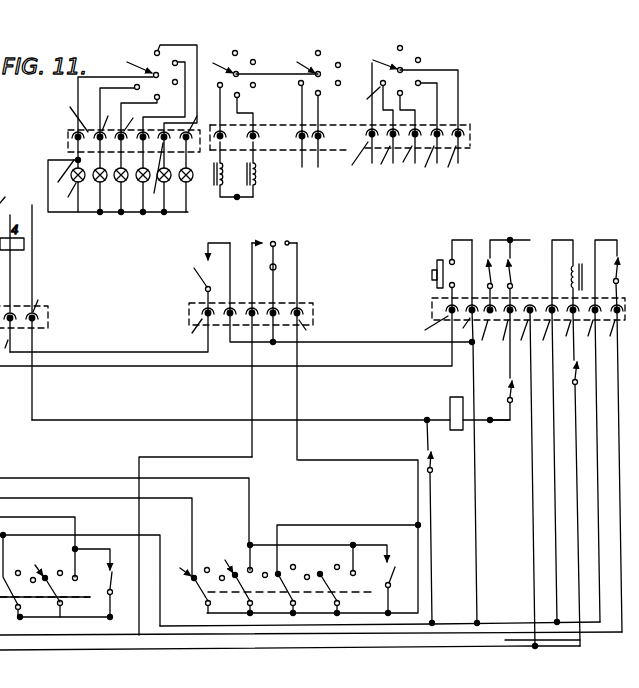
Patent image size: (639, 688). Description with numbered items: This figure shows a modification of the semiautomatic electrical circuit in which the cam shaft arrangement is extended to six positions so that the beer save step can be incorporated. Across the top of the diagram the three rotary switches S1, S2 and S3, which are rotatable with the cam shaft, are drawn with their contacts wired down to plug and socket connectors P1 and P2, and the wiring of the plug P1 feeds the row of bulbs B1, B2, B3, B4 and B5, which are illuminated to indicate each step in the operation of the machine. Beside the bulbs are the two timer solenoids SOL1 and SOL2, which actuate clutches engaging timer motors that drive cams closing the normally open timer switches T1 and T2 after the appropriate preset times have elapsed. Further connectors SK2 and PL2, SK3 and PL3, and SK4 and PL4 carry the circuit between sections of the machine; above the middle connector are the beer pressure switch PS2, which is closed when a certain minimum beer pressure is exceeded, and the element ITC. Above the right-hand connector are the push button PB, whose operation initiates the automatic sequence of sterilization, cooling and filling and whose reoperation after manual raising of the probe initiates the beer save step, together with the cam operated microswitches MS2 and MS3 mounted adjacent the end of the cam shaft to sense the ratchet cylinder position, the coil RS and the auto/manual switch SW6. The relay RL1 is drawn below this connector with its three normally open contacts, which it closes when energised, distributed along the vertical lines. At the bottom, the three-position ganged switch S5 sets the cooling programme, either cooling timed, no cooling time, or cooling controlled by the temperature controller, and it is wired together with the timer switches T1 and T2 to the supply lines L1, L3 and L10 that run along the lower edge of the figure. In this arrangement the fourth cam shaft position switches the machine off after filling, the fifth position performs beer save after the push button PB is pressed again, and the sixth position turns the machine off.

The plug 1 P1 is at (72, 141).
The rotary switch S1 is at (406, 78).
The rotary switch S2 is at (272, 73).
The rotary switch S3 is at (155, 72).
The plug 2 P2 is at (416, 149).
The timer solenoid SOL1 is at (237, 197).
The timer solenoid SOL2 is at (257, 181).
The bulb B1 is at (100, 212).
The bulb B2 is at (121, 212).
The bulb B3 is at (137, 213).
The bulb B4 is at (165, 212).
The bulb B5 is at (192, 188).
The socket 2 SK2 is at (39, 350).
The plug 2 PL2 is at (64, 327).
The socket 3 SK3 is at (242, 297).
The plug 3 PL3 is at (172, 319).
The socket 4 SK4 is at (511, 323).
The plug 4 PL4 is at (410, 320).
The beer pressure switch PS2 is at (203, 276).
The thermal cutout ITC is at (274, 340).
The push button PB is at (436, 264).
The cam operated microswitch MS2 is at (485, 256).
The cam operated microswitch MS3 is at (513, 256).
The relay solenoid RS is at (575, 250).
The auto/manual switch SW6 is at (604, 271).
The relay RL1 is at (434, 403).
The timer switch T1 is at (122, 585).
The timer switch T2 is at (397, 567).
The manually operable ganged switch S5 is at (294, 544).
The line 1 L1 is at (87, 650).
The line 3 L3 is at (452, 623).
The line 10 L10 is at (522, 632).